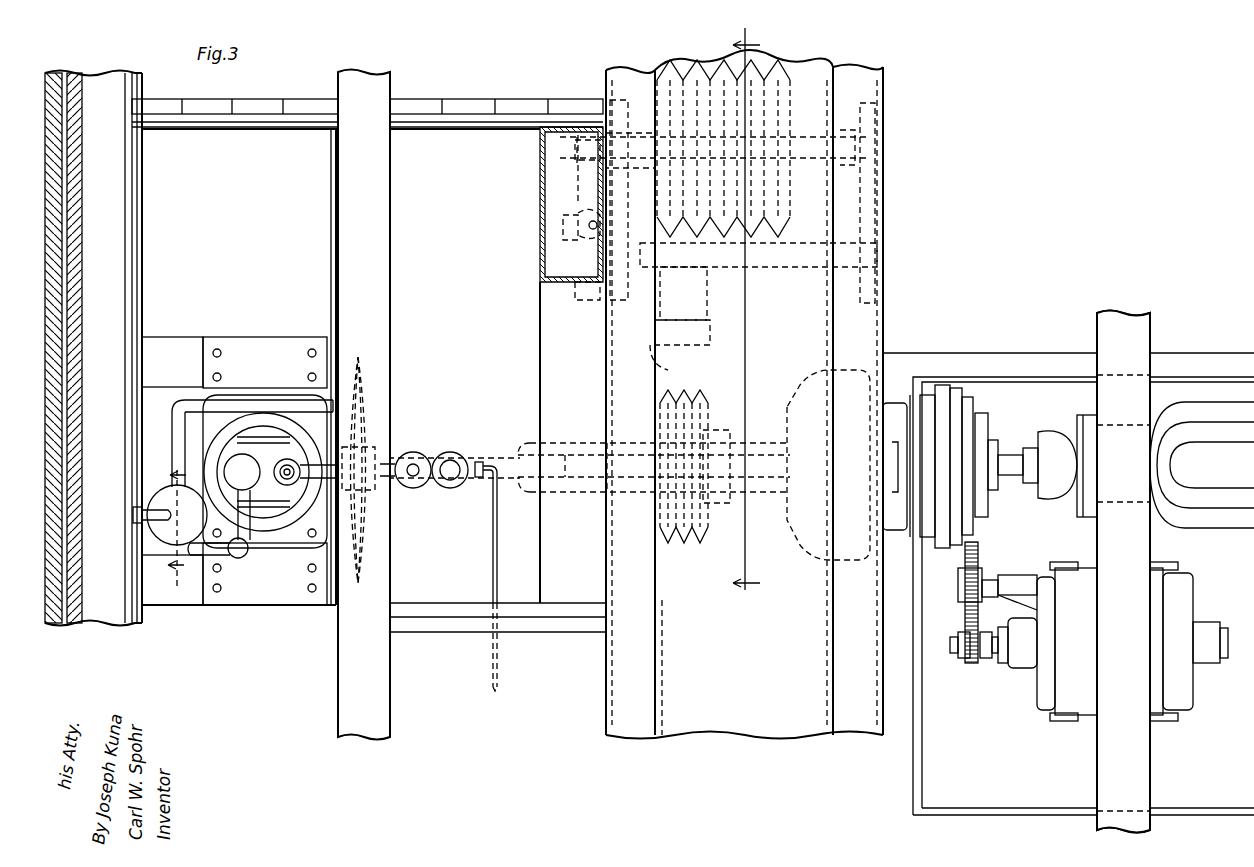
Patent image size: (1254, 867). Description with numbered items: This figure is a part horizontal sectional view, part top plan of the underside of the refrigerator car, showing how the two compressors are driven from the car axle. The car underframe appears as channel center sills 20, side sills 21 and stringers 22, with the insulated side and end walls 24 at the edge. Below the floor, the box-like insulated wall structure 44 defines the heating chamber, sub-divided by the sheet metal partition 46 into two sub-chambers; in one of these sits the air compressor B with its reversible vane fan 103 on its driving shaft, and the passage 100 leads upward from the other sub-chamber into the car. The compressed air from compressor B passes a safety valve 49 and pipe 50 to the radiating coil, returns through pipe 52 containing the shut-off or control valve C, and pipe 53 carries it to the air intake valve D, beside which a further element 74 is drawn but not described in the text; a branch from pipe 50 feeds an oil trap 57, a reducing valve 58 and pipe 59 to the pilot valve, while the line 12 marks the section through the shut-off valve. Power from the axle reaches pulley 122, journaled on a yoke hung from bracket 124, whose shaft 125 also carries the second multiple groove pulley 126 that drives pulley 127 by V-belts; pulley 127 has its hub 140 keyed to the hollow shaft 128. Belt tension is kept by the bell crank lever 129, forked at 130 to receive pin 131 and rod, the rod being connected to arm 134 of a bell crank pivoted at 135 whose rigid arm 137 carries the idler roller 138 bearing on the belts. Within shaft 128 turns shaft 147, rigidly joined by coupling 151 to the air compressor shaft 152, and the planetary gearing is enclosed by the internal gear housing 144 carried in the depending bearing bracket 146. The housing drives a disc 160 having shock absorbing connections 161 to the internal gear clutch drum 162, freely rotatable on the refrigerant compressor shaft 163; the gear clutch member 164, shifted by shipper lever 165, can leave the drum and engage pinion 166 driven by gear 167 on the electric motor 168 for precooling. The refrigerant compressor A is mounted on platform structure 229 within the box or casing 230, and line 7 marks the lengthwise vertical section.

The section line 7 is at (746, 318).
The section line 12 is at (173, 520).
The channel center sill 20 is at (828, 708).
The side sill 21 is at (128, 73).
The stringer 22 is at (378, 72).
The side and end wall 24 is at (64, 74).
The insulated wall structure 44 is at (259, 99).
The sheet metal partition 46 is at (331, 300).
The safety valve 49 is at (292, 500).
The pipe 50 is at (335, 452).
The pipe 52 is at (172, 418).
The pipe 53 is at (240, 559).
The oil trap 57 is at (416, 452).
The reducing valve 58 is at (455, 452).
The pipe 59 is at (492, 510).
The valve 74 is at (178, 520).
The passage 100 is at (550, 265).
The reversible vane fan 103 is at (358, 362).
The pulley 122 is at (760, 70).
The bracket 124 is at (608, 100).
The shaft 125 is at (852, 157).
The second multiple groove pulley 126 is at (675, 56).
The pulley 127 is at (712, 392).
The hollow shaft 128 is at (756, 445).
The bell crank lever 129 is at (575, 180).
The fork 130 is at (576, 224).
The pin 131 is at (563, 236).
The arm 134 is at (583, 302).
The pivot 135 is at (778, 270).
The arm 137 is at (672, 366).
The idler roller 138 is at (683, 293).
The hub 140 is at (718, 505).
The internal gear housing 144 is at (812, 565).
The depending bearing bracket 146 is at (889, 400).
The shaft 147 is at (773, 492).
The coupling 151 is at (530, 444).
The air compressor shaft 152 is at (505, 485).
The disc 160 is at (925, 537).
The shock absorbing connection 161 is at (952, 540).
The internal gear clutch drum 162 is at (945, 385).
The refrigerant compressor shaft 163 is at (1010, 475).
The gear clutch member 164 is at (974, 406).
The shipper lever 165 is at (990, 422).
The pinion 166 is at (978, 549).
The gear 167 is at (970, 665).
The electric motor 168 is at (1190, 608).
The platform structure 229 is at (992, 353).
The box or casing 230 is at (913, 803).
The refrigerant compressor A is at (1202, 465).
The air compressor B is at (270, 542).
The shut-off or control valve C is at (170, 510).
The air intake valve D is at (242, 472).